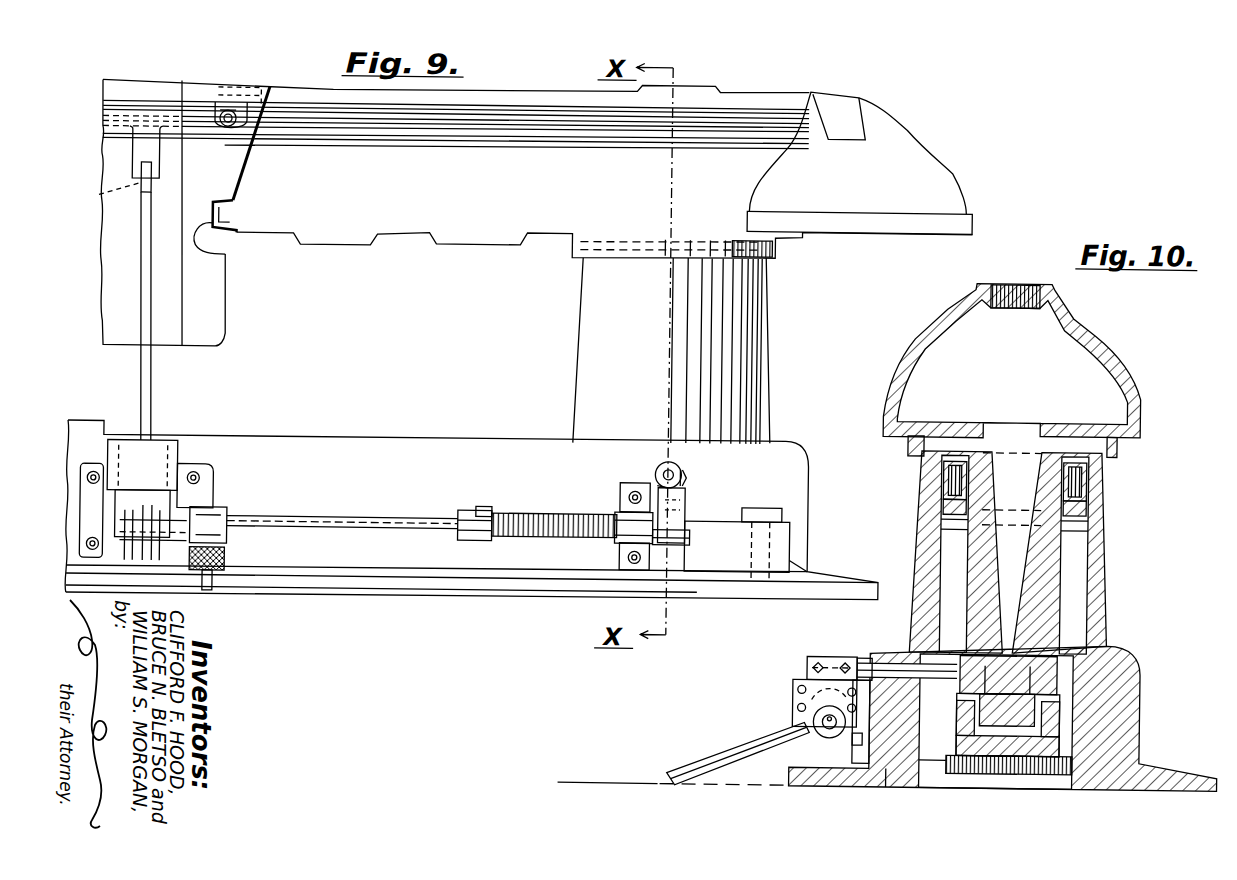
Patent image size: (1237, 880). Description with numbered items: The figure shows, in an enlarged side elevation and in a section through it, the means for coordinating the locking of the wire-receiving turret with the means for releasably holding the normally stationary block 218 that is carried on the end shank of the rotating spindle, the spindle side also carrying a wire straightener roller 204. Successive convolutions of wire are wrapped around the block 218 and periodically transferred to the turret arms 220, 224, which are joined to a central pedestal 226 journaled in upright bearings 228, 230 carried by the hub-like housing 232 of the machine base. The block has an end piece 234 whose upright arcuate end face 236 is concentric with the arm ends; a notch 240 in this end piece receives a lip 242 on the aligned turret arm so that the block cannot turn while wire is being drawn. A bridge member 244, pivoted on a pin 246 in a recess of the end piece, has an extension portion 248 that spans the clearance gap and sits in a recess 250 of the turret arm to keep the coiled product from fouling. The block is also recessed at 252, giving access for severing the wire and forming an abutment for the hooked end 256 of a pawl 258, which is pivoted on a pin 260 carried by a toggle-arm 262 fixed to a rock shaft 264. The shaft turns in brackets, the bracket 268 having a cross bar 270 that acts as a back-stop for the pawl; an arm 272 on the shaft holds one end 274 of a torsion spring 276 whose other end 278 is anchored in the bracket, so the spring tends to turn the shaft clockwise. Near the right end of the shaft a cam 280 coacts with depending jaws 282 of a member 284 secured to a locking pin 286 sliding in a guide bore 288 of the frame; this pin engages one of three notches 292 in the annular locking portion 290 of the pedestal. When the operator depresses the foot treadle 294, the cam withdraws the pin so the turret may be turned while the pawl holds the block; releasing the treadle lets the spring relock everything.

In FIG. 9, the wire straightener roller 204 is at (230, 556).
In FIG. 9, the stationary block 218 is at (114, 96).
In FIG. 9, the turret arm 220 is at (425, 227).
In FIG. 10, the turret arm 220 is at (1132, 364).
In FIG. 9, the turret arm 224 is at (931, 165).
In FIG. 10, the central pedestal 226 is at (1050, 580).
In FIG. 10, the upright bearing 228 is at (1086, 472).
In FIG. 10, the upright bearing 230 is at (1048, 715).
In FIG. 9, the hub-like housing 232 is at (739, 334).
In FIG. 10, the hub-like housing 232 is at (1097, 530).
In FIG. 9, the end piece 234 is at (203, 306).
In FIG. 9, the arcuate end face 236 is at (250, 160).
In FIG. 9, the notch 240 is at (220, 245).
In FIG. 9, the lip 242 is at (223, 216).
In FIG. 9, the bridge member 244 is at (215, 103).
In FIG. 9, the pin 246 is at (224, 131).
In FIG. 9, the extension portion 248 is at (297, 98).
In FIG. 9, the recess 250 is at (831, 111).
In FIG. 9, the recess 252 is at (139, 157).
In FIG. 9, the hooked end 256 is at (104, 190).
In FIG. 9, the pawl 258 is at (152, 378).
In FIG. 9, the pin 260 is at (144, 556).
In FIG. 9, the toggle-arm 262 is at (162, 560).
In FIG. 9, the rock shaft 264 is at (340, 521).
In FIG. 9, the bracket 268 is at (209, 477).
In FIG. 9, the cross bar 270 is at (157, 450).
In FIG. 9, the arm 272 is at (485, 505).
In FIG. 9, the spring end 274 is at (477, 507).
In FIG. 9, the torsion spring 276 is at (537, 503).
In FIG. 9, the spring end 278 is at (624, 497).
In FIG. 9, the cam 280 is at (689, 492).
In FIG. 10, the cam 280 is at (807, 685).
In FIG. 9, the depending jaw 282 is at (672, 528).
In FIG. 10, the depending jaw 282 is at (837, 740).
In FIG. 9, the member 284 is at (703, 465).
In FIG. 10, the member 284 is at (808, 680).
In FIG. 9, the locking pin 286 is at (665, 460).
In FIG. 10, the locking pin 286 is at (863, 662).
In FIG. 10, the guide bore 288 is at (901, 670).
In FIG. 10, the annular locking portion 290 is at (1040, 626).
In FIG. 10, the notch 292 is at (966, 655).
In FIG. 10, the foot treadle 294 is at (701, 754).